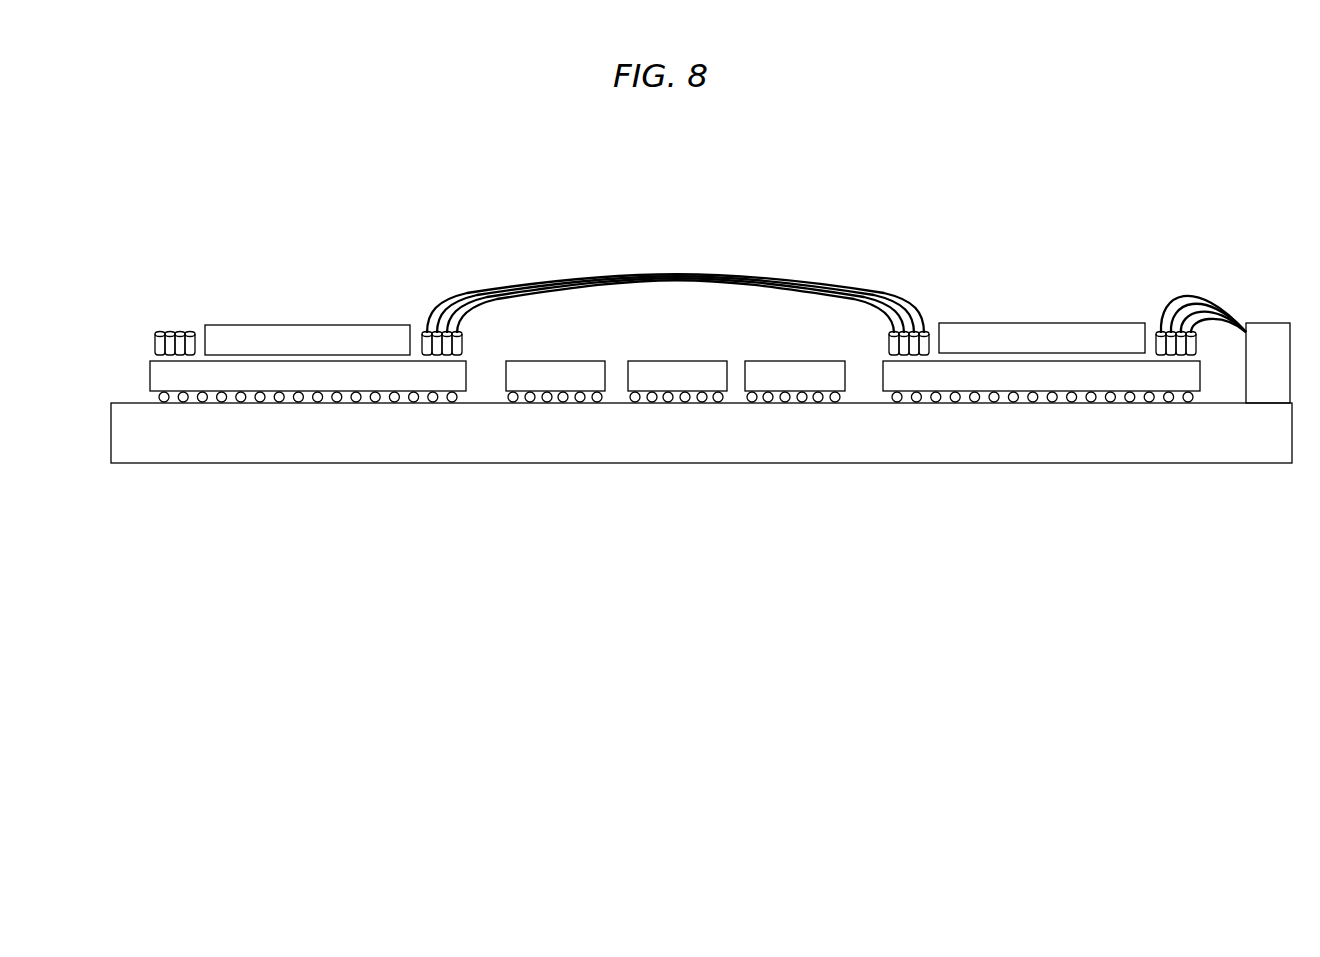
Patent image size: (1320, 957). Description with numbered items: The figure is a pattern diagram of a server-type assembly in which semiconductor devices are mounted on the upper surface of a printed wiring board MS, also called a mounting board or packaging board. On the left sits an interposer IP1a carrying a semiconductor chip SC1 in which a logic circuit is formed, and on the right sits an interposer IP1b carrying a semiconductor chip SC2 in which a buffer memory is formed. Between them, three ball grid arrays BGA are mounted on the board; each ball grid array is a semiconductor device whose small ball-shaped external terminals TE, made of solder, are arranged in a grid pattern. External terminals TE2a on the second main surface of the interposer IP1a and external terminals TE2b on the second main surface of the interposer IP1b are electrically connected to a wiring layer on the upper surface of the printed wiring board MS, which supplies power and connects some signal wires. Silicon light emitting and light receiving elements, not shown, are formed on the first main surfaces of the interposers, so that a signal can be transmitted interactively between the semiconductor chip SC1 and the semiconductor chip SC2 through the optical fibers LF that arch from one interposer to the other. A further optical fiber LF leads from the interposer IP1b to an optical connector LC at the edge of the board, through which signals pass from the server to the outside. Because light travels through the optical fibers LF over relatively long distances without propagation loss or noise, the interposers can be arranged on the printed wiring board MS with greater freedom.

The printed wiring board MS is at (460, 452).
The interposer IP1a is at (350, 375).
The interposer IP1b is at (1083, 375).
The semiconductor chip SC1 is at (273, 340).
The semiconductor chip SC2 is at (1005, 338).
The optical fiber LF is at (915, 292).
The optical connector LC is at (1265, 333).
The ball grid array BGA is at (560, 372).
The external terminal TE is at (530, 401).
The external terminal TE2a is at (222, 401).
The external terminal TE2b is at (955, 401).